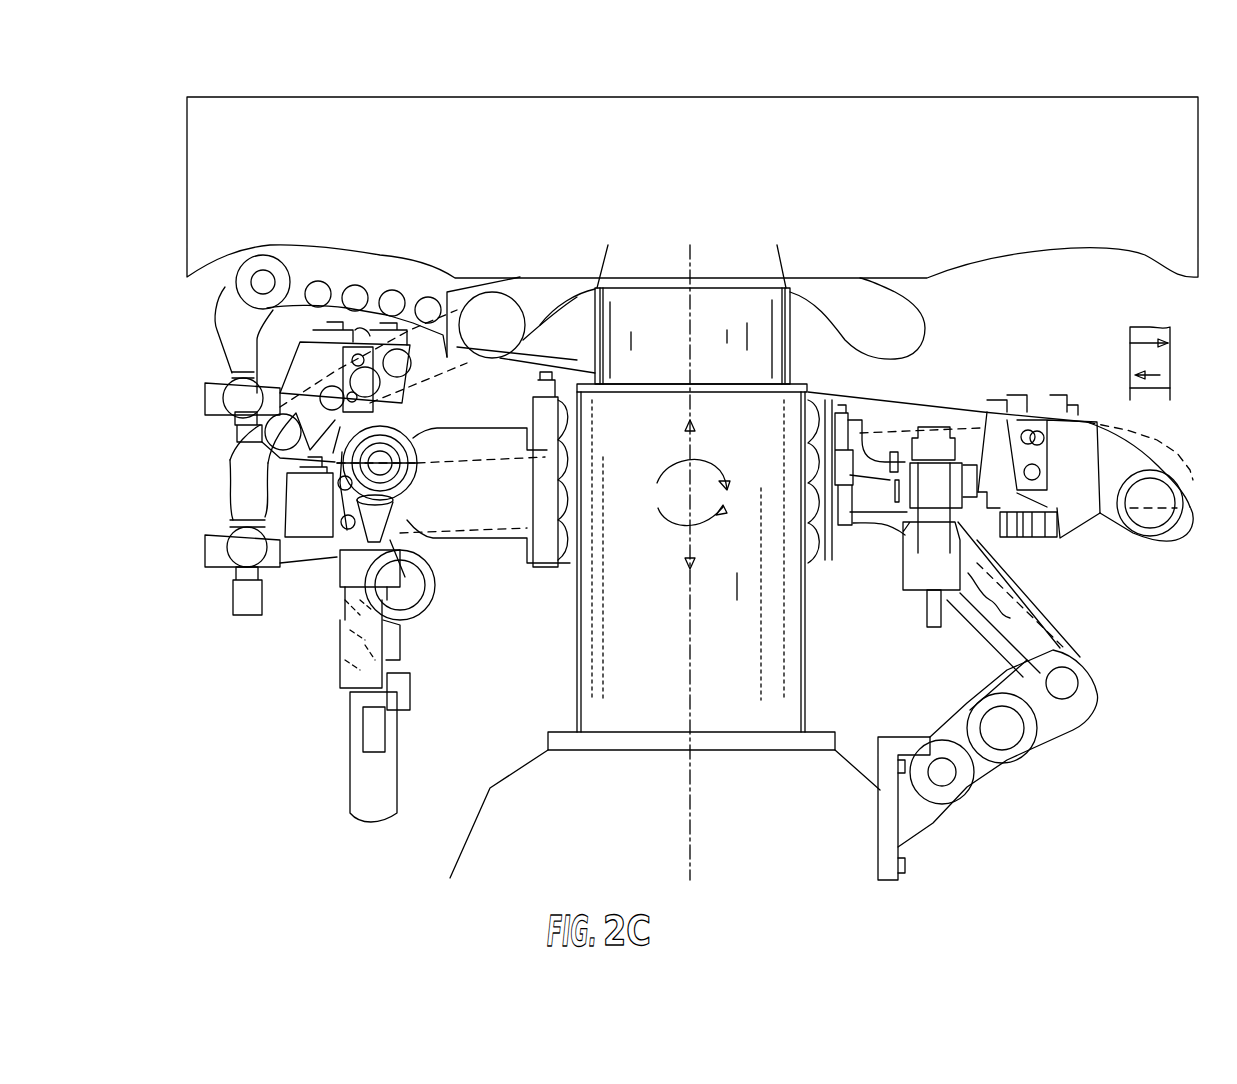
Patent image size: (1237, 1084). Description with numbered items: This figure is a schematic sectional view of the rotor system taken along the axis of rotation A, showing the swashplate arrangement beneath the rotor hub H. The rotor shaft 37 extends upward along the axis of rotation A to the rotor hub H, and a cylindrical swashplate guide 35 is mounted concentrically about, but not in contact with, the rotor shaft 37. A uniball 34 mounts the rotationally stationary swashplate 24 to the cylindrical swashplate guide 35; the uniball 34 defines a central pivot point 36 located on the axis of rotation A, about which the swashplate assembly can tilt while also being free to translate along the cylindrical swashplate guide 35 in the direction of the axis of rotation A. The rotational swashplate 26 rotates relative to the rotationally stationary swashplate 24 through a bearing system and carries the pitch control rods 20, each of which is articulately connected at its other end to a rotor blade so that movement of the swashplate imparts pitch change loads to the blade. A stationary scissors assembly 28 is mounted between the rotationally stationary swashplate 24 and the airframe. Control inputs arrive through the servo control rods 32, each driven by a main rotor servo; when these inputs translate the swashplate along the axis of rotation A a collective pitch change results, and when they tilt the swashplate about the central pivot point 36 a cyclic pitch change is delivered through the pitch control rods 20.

The pitch control rod 20 is at (1160, 380).
The rotationally stationary swashplate 24 is at (990, 522).
The rotational swashplate 26 is at (1080, 487).
The stationary scissors assembly 28 is at (1085, 742).
The servo control rod 32 is at (363, 780).
The uniball 34 is at (822, 405).
The cylindrical swashplate guide 35 is at (808, 614).
The central pivot point 36 is at (688, 488).
The rotor shaft 37 is at (787, 358).
The rotor hub H is at (707, 113).
The axis of rotation A is at (693, 872).